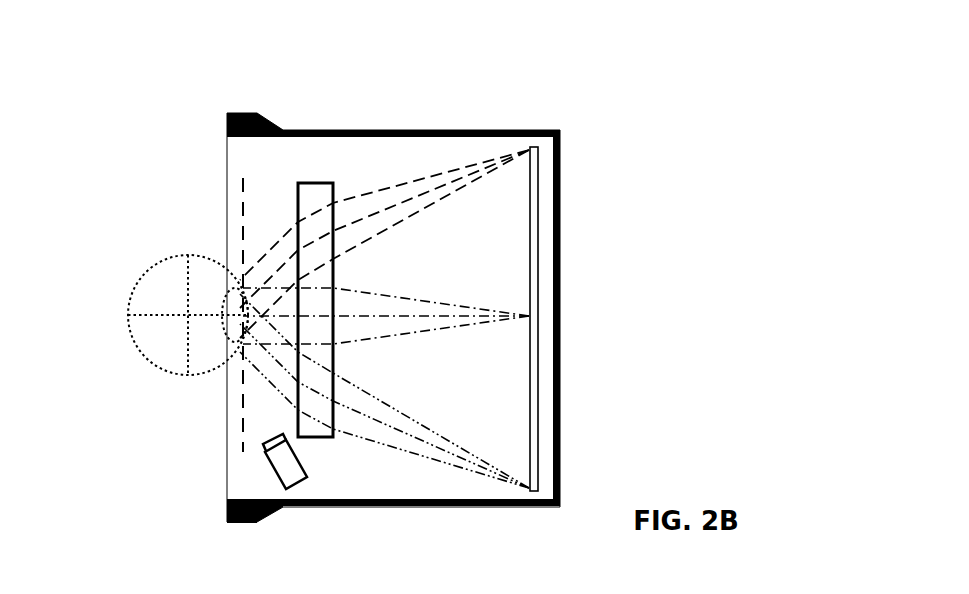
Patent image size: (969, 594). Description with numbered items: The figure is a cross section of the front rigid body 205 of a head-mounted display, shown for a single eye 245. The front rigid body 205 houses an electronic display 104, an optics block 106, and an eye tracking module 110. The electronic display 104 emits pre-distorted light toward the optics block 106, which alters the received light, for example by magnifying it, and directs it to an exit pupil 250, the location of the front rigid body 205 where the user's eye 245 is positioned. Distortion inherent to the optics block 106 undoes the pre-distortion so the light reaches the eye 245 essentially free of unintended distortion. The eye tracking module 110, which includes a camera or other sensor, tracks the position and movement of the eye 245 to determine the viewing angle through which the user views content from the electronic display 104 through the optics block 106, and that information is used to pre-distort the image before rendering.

The electronic display 104 is at (542, 155).
The optics block 106 is at (296, 191).
The eye tracking module 110 is at (292, 470).
The front rigid body 205 is at (556, 127).
The eye 245 is at (159, 264).
The exit pupil 250 is at (239, 433).